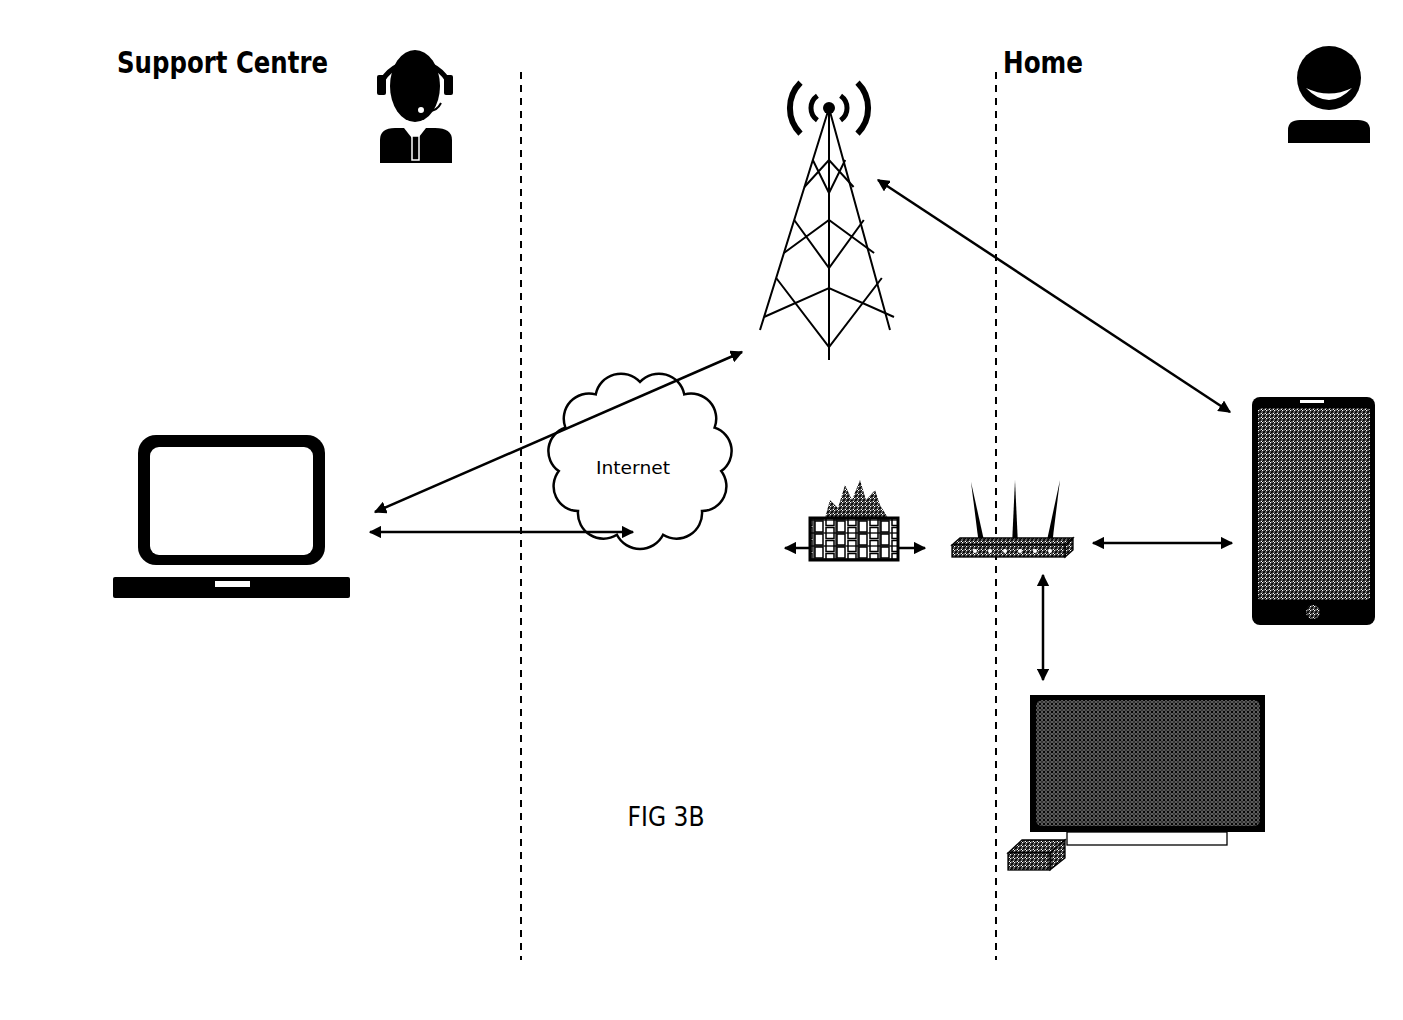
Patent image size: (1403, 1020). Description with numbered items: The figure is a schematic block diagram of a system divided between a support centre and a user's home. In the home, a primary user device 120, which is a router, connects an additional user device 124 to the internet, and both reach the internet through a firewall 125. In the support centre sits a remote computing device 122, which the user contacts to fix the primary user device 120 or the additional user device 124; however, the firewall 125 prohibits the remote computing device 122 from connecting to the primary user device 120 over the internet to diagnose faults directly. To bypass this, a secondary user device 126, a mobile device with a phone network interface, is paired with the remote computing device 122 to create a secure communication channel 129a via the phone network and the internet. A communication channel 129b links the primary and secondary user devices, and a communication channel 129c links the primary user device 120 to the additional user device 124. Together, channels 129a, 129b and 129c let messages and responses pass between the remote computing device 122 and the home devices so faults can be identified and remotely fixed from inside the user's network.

The primary user device 120 is at (1050, 563).
The remote computing device 122 is at (260, 598).
The additional user device 124 is at (1264, 780).
The firewall 125 is at (838, 555).
The secondary user device 126 is at (1333, 568).
The secure communication channel 129a is at (800, 353).
The communication channel 129b is at (1152, 538).
The communication channel 129c is at (1040, 650).